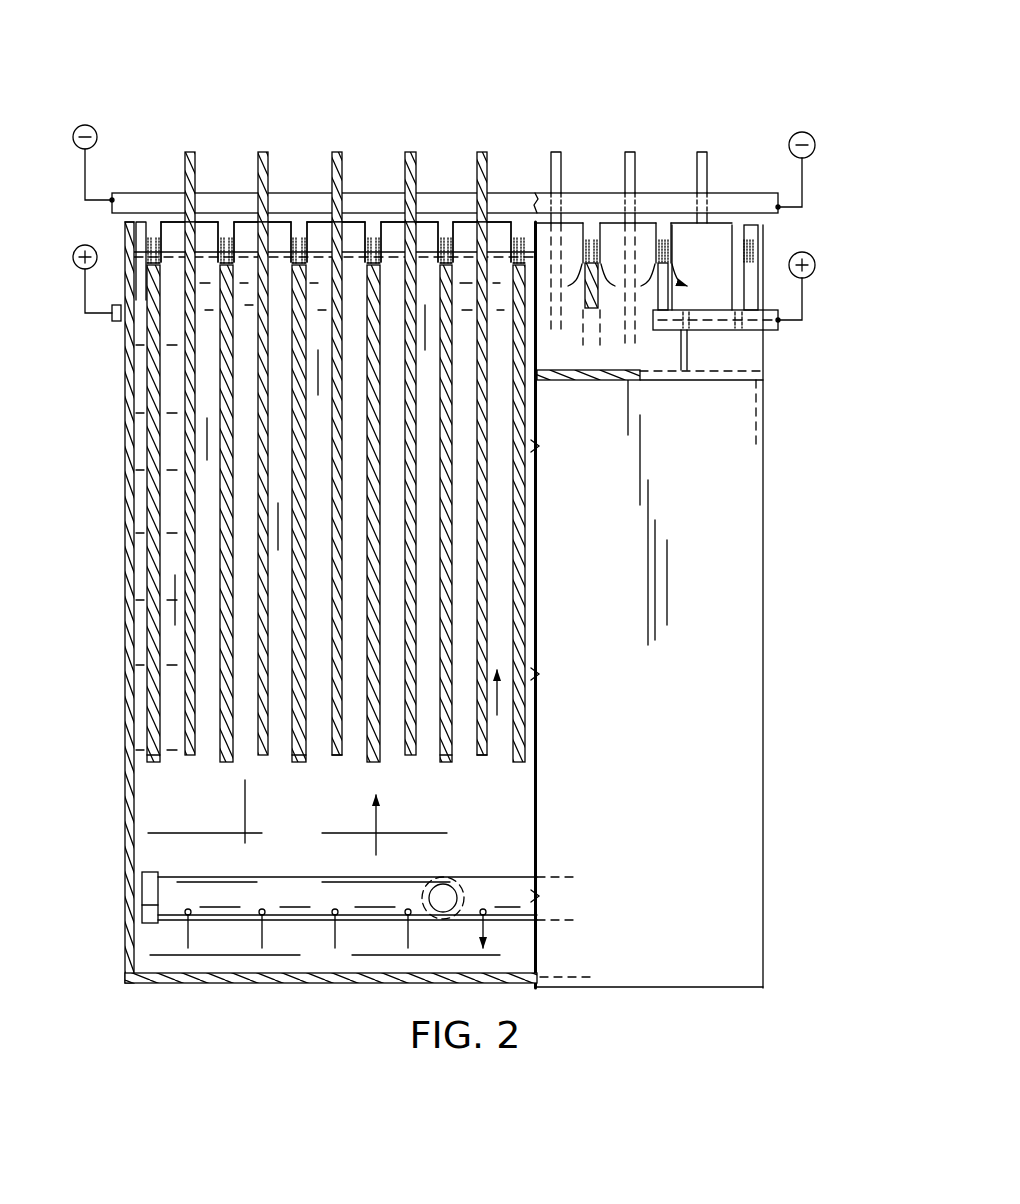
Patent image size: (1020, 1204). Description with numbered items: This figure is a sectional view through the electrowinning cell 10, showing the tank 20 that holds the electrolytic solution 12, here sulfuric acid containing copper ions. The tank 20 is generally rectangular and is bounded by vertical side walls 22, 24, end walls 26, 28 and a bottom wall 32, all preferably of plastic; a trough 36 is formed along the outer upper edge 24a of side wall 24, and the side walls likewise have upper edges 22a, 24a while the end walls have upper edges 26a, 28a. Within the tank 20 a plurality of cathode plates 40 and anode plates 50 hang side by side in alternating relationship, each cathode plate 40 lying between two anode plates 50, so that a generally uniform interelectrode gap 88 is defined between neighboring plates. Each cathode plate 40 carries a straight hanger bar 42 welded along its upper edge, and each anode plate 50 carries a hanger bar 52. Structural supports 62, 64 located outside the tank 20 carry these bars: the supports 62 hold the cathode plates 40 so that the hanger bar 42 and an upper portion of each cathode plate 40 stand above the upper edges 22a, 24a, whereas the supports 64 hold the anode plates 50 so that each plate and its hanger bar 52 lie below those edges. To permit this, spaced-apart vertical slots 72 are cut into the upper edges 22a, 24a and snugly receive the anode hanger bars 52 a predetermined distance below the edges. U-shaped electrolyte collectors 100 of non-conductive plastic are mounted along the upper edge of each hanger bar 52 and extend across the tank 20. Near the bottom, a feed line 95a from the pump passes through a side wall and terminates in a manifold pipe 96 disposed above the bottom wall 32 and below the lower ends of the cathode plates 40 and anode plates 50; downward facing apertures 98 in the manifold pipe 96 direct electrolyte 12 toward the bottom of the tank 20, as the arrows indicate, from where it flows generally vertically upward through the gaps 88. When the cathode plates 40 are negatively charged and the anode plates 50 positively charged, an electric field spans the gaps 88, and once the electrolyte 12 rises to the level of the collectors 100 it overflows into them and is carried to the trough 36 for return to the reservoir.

The electrowinning cell 10 is at (566, 68).
The electrolytic solution 12 is at (160, 797).
The tank 20 is at (768, 735).
The side wall 22 is at (279, 238).
The upper edge of side wall 22a is at (210, 218).
The side wall 24 is at (733, 627).
The upper edge of side wall 24a is at (645, 225).
The end wall 26 is at (125, 650).
The upper edge of end wall 26a is at (134, 221).
The end wall 28 is at (765, 570).
The upper edge of end wall 28a is at (747, 232).
The bottom wall 32 is at (233, 984).
The trough 36 is at (575, 352).
The cathode plate 40 is at (263, 523).
The hanger bar 42 is at (187, 178).
The anode plate 50 is at (225, 470).
The hanger bar 52 is at (160, 295).
The structural support 62 is at (543, 196).
The structural support 64 is at (113, 324).
The vertical slot 72 is at (222, 234).
The interelectrode gap 88 is at (358, 733).
The feed line 95a is at (458, 880).
The manifold pipe 96 is at (293, 895).
The aperture 98 is at (188, 908).
The electrolyte collector 100 is at (157, 240).